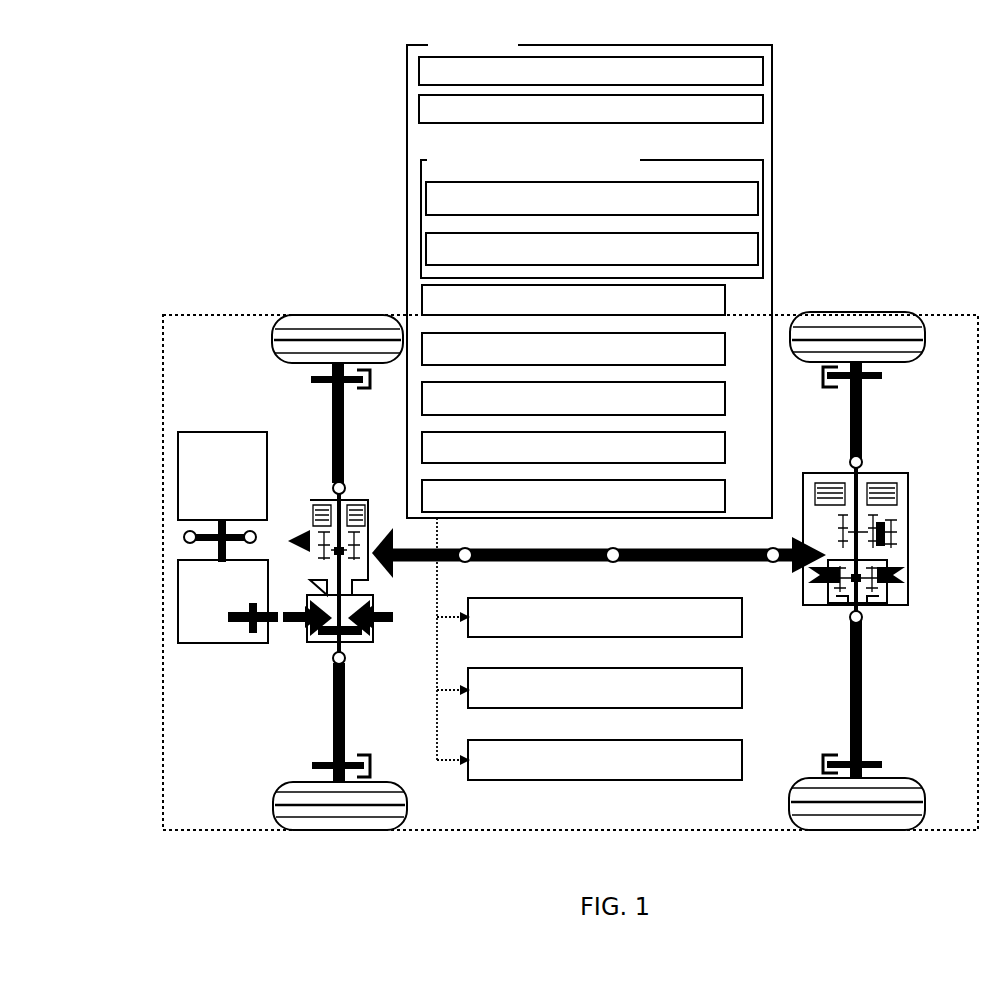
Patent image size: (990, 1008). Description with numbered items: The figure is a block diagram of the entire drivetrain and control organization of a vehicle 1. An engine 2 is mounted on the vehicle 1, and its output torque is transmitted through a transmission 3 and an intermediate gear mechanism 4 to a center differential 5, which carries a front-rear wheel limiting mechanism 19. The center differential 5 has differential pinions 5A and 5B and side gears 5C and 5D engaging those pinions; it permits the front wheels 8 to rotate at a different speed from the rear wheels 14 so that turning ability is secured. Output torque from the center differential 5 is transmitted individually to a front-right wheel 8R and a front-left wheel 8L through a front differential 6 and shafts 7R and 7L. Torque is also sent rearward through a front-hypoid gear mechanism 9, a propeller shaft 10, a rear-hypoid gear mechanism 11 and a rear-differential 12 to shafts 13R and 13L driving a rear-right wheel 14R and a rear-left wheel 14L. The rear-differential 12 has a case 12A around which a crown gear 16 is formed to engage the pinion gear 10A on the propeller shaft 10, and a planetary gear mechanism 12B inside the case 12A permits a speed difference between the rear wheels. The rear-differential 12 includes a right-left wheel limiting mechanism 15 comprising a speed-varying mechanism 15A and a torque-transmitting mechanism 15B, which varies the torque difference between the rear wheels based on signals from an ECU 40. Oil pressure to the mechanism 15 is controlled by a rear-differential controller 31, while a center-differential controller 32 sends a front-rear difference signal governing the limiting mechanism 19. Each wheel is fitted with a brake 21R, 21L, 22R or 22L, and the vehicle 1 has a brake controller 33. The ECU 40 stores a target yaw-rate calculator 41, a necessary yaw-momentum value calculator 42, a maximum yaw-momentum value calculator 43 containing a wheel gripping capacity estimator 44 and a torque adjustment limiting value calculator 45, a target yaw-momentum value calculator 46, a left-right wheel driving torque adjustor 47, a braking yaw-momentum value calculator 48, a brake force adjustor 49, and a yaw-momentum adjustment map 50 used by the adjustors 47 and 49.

The vehicle 1 is at (158, 316).
The engine 2 is at (218, 440).
The transmission 3 is at (225, 645).
The intermediate gear mechanism 4 is at (289, 633).
The center differential 5 is at (349, 617).
The differential pinion 5A is at (306, 610).
The differential pinion 5B is at (369, 612).
The side gear 5C is at (352, 642).
The side gear 5D is at (321, 597).
The front differential 6 is at (318, 537).
The shaft 7R is at (333, 470).
The shaft 7L is at (334, 684).
The front wheels 8 is at (315, 542).
The front-right wheel 8R is at (276, 348).
The front-left wheel 8L is at (277, 810).
The front-hypoid gear mechanism 9 is at (385, 537).
The propeller shaft 10 is at (609, 560).
The pinion gear 10A is at (812, 551).
The rear-hypoid gear mechanism 11 is at (873, 541).
The rear-differential 12 is at (880, 602).
The case 12A is at (879, 605).
The planetary gear mechanism 12B is at (838, 605).
The shaft 13R is at (862, 440).
The shaft 13L is at (862, 672).
The rear wheels 14 is at (878, 539).
The rear-right wheel 14R is at (915, 345).
The rear-left wheel 14L is at (917, 810).
The right-left wheel limiting mechanism 15 is at (887, 493).
The speed-varying mechanism 15A is at (903, 528).
The torque-transmitting mechanism 15B is at (908, 495).
The crown gear 16 is at (906, 576).
The front-rear wheel limiting mechanism 19 is at (308, 505).
The brake 21R is at (356, 412).
The brake 21L is at (366, 752).
The brake 22R is at (835, 403).
The brake 22L is at (836, 748).
The rear-differential controller 31 is at (706, 634).
The center-differential controller 32 is at (706, 705).
The brake controller 33 is at (706, 777).
The ECU 40 is at (606, 275).
The target yaw-rate calculator 41 is at (763, 72).
The necessary yaw-momentum value calculator 42 is at (763, 115).
The maximum yaw-momentum value calculator 43 is at (763, 166).
The wheel gripping capacity estimator 44 is at (758, 202).
The torque adjustment limiting value calculator 45 is at (758, 250).
The target yaw-momentum value calculator 46 is at (719, 297).
The left-right wheel driving torque adjustor 47 is at (719, 346).
The braking yaw-momentum value calculator 48 is at (719, 394).
The brake force adjustor 49 is at (719, 443).
The yaw-momentum adjustment map 50 is at (719, 492).